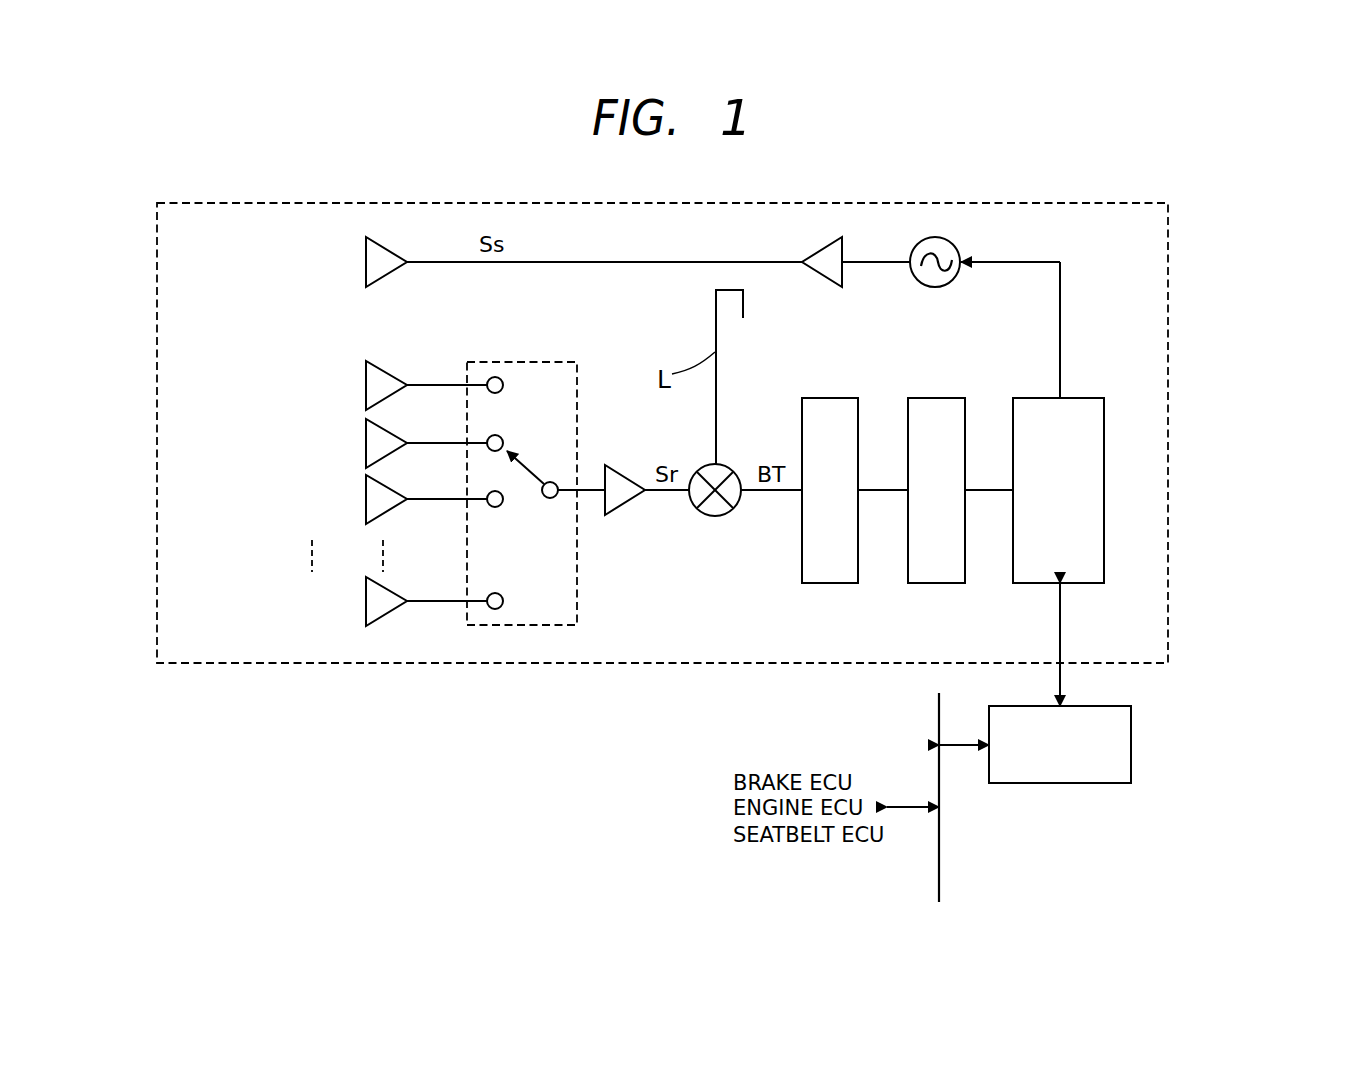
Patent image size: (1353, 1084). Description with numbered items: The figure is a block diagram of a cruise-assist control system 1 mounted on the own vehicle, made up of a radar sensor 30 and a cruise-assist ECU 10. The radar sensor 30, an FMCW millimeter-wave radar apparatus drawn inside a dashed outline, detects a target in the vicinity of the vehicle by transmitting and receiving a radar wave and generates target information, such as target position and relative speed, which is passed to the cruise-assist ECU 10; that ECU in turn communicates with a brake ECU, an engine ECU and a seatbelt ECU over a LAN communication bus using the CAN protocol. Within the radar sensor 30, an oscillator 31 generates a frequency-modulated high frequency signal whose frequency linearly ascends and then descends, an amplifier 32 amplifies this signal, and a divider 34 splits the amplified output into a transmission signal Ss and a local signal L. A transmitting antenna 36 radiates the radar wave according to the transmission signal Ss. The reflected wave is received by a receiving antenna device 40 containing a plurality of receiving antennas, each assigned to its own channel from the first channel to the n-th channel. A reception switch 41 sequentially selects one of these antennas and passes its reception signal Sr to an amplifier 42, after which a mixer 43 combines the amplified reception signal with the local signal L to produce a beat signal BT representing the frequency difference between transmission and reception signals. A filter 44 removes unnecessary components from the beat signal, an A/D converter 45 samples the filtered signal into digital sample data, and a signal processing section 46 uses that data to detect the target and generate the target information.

The cruise-assist control system 1 is at (1016, 182).
The cruise-assist ECU 10 is at (1131, 745).
The radar sensor 30 is at (1168, 367).
The oscillator 31 is at (950, 286).
The amplifier 32 is at (826, 283).
The divider 34 is at (715, 276).
The transmitting antenna 36 is at (385, 273).
The receiving antenna device 40 is at (266, 362).
The reception switch 41 is at (577, 602).
The amplifier 42 is at (622, 512).
The mixer 43 is at (718, 517).
The filter 44 is at (830, 584).
The A/D converter 45 is at (938, 584).
The signal processing section 46 is at (1085, 584).